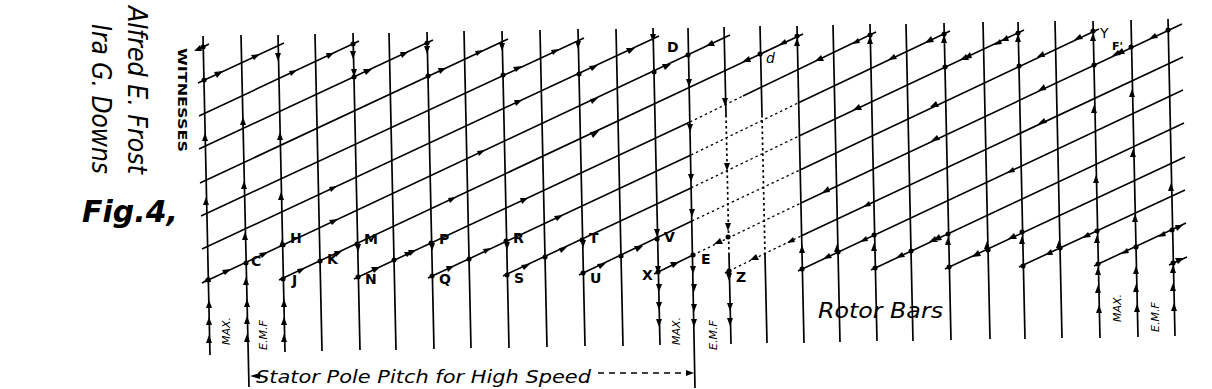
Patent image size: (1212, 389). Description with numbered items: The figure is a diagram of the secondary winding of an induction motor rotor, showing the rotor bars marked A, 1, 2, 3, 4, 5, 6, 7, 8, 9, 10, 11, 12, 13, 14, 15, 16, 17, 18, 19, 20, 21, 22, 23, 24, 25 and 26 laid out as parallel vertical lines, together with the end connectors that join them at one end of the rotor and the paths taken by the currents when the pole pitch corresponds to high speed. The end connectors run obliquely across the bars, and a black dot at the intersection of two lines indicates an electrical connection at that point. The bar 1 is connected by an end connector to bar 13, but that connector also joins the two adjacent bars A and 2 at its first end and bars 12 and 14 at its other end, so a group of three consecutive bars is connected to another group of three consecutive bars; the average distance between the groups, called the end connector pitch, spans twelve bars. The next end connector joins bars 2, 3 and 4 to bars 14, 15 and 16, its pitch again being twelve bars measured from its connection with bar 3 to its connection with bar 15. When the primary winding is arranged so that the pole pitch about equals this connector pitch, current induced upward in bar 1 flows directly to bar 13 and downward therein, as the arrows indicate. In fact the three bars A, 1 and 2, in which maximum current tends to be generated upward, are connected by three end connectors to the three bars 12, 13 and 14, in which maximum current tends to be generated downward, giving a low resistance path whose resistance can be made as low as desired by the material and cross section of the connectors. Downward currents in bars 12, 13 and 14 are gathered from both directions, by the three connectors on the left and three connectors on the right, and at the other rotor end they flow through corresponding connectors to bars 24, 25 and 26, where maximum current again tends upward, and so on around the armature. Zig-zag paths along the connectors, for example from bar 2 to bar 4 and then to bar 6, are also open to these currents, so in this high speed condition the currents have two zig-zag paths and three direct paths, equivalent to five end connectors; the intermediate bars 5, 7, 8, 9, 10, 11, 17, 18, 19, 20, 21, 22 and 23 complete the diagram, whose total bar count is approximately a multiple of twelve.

The rotor bar A is at (204, 186).
The rotor bar 1 is at (243, 202).
The rotor bar 2 is at (279, 184).
The rotor bar 3 is at (316, 183).
The rotor bar 4 is at (354, 182).
The rotor bar 5 is at (390, 182).
The rotor bar 6 is at (428, 181).
The rotor bar 7 is at (465, 181).
The rotor bar 8 is at (503, 180).
The rotor bar 9 is at (541, 180).
The rotor bar 10 is at (578, 179).
The rotor bar 11 is at (616, 179).
The rotor bar 12 is at (653, 178).
The rotor bar 13 is at (688, 199).
The rotor bar 14 is at (724, 177).
The rotor bar 15 is at (760, 176).
The rotor bar 16 is at (797, 176).
The rotor bar 17 is at (833, 175).
The rotor bar 18 is at (870, 174).
The rotor bar 19 is at (906, 174).
The rotor bar 20 is at (944, 173).
The rotor bar 21 is at (983, 173).
The rotor bar 22 is at (1018, 172).
The rotor bar 23 is at (1055, 172).
The rotor bar 24 is at (1093, 171).
The rotor bar 25 is at (1131, 171).
The rotor bar 26 is at (1168, 170).